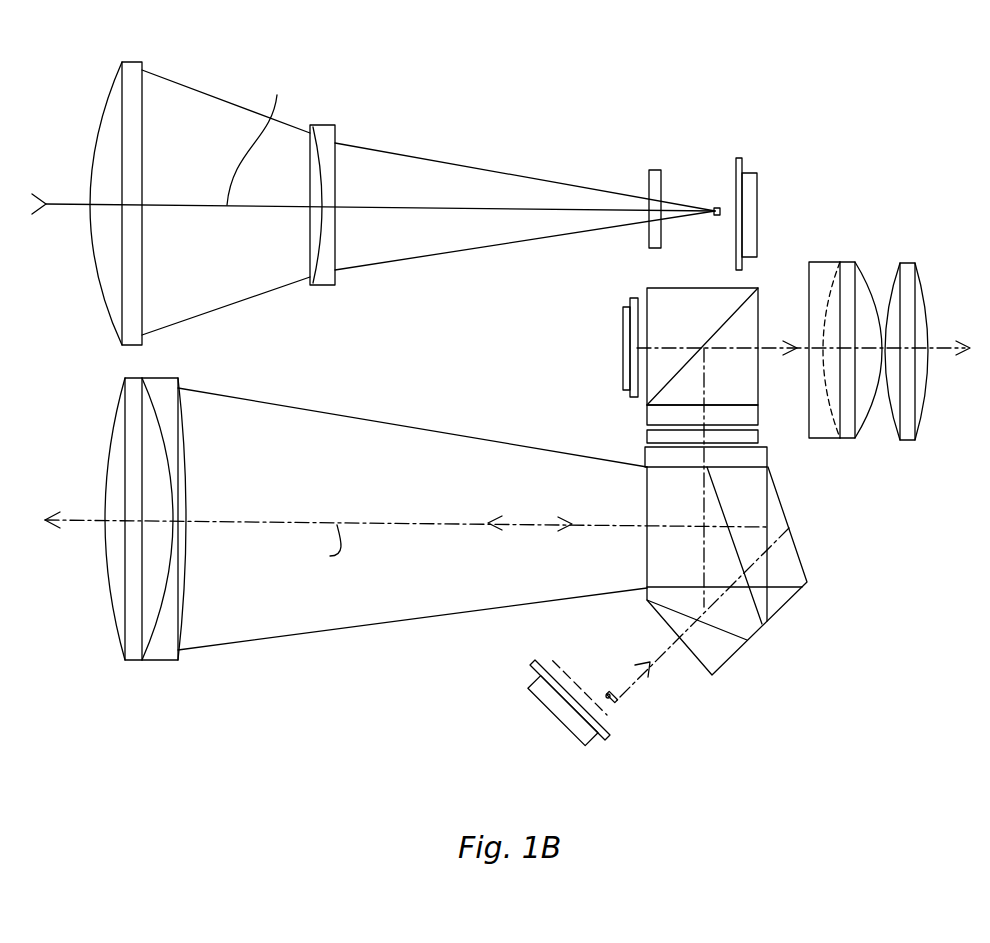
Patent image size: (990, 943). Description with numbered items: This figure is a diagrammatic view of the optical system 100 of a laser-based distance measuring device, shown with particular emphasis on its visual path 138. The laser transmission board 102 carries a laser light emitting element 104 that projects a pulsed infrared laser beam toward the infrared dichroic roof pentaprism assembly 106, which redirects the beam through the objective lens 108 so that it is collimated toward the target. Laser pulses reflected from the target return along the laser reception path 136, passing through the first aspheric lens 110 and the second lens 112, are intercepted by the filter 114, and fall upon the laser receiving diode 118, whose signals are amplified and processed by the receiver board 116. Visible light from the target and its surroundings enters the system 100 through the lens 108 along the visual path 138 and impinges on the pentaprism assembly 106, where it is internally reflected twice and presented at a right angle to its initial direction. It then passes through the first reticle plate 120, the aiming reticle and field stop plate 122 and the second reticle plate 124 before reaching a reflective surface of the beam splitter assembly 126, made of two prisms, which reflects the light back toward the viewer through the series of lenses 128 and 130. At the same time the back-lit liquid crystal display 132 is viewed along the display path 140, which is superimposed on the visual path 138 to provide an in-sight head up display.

The optical system 100 is at (916, 666).
The laser transmission board 102 is at (607, 739).
The laser light emitting element 104 is at (613, 705).
The infrared dichroic roof pentaprism assembly 106 is at (800, 568).
The objective lens 108 is at (158, 662).
The first aspheric lens 110 is at (137, 61).
The second lens 112 is at (327, 125).
The filter 114 is at (653, 168).
The receiver board 116 is at (753, 173).
The laser receiving diode 118 is at (713, 217).
The first reticle plate 120 is at (768, 456).
The aiming reticle and field stop plate 122 is at (647, 437).
The second reticle plate 124 is at (758, 415).
The beam splitter assembly 126 is at (762, 278).
The lens 128 is at (850, 262).
The lens 130 is at (910, 263).
The back-lit liquid crystal display 132 is at (633, 297).
The laser reception path 136 is at (402, 208).
The visual path 138 is at (278, 518).
The display path 140 is at (665, 345).